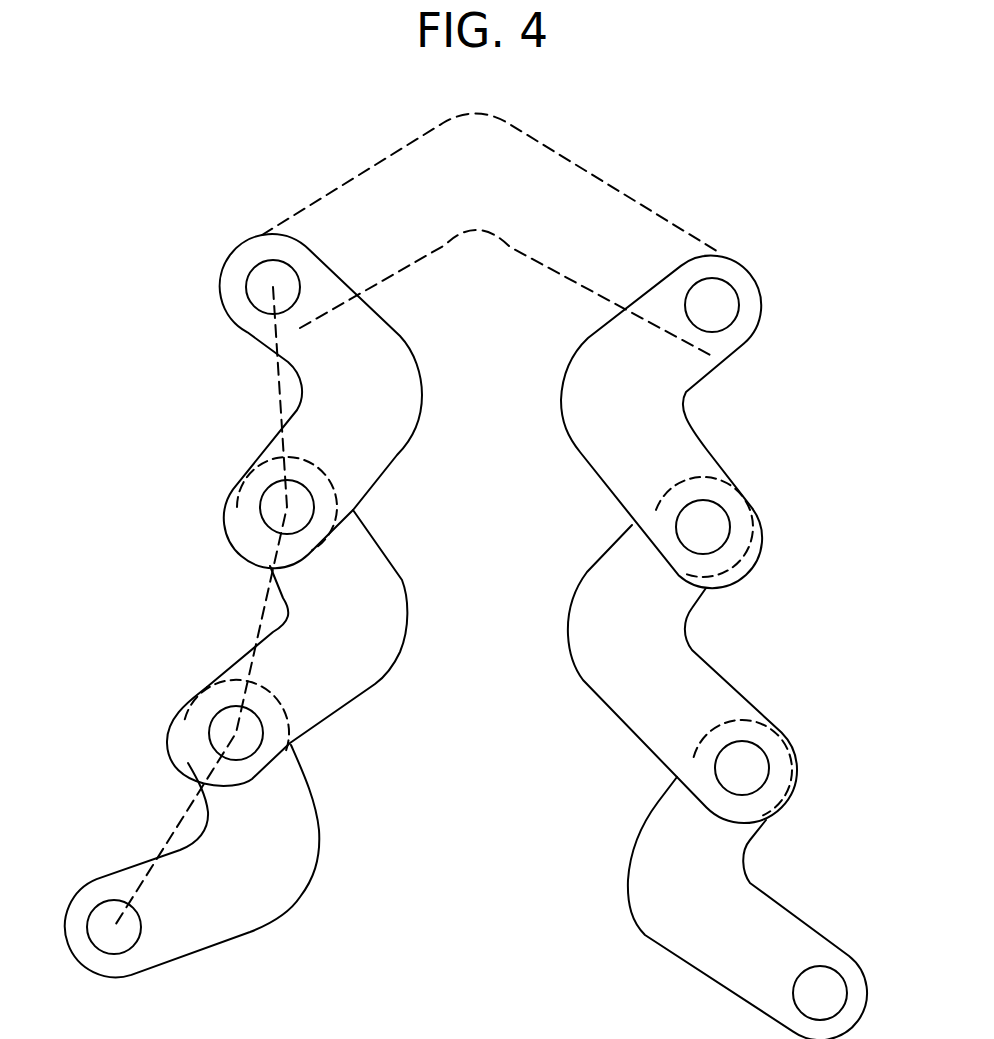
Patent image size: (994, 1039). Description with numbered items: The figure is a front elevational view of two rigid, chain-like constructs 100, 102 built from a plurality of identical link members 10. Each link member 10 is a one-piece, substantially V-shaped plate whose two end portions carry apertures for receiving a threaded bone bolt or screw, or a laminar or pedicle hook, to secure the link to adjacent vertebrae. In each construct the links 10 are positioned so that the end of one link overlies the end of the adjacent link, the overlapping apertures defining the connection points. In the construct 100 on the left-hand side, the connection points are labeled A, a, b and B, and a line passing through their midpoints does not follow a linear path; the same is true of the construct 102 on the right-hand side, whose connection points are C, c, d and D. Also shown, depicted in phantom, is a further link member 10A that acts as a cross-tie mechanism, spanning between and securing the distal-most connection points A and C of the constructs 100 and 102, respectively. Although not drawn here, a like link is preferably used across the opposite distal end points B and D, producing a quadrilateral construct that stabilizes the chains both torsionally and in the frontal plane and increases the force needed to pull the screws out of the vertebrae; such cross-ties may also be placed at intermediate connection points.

The link member 10 is at (471, 619).
The link member (cross-tie) 10A is at (666, 212).
The rigid construct 100 is at (233, 606).
The rigid construct 102 is at (729, 641).
The connection point A is at (262, 283).
The connection point a is at (268, 506).
The connection point b is at (216, 737).
The connection point B is at (97, 932).
The connection point C is at (722, 302).
The connection point c is at (717, 523).
The connection point d is at (760, 777).
The connection point D is at (833, 993).